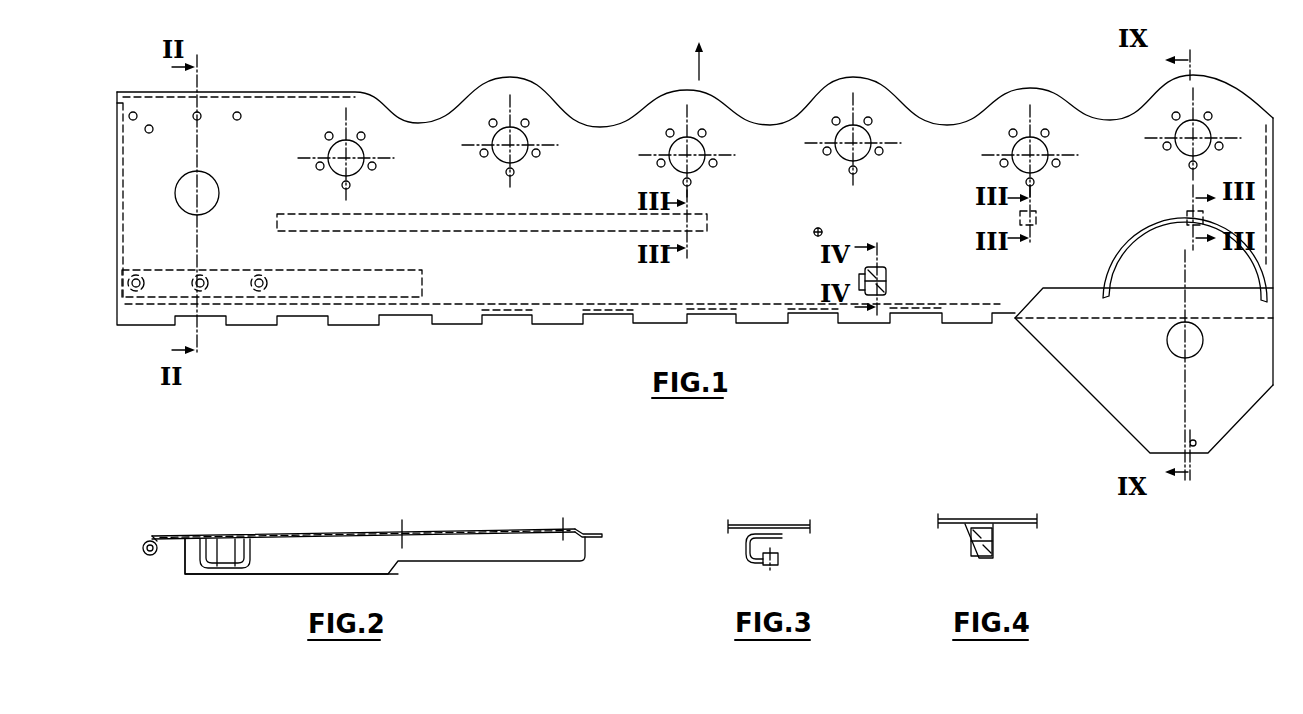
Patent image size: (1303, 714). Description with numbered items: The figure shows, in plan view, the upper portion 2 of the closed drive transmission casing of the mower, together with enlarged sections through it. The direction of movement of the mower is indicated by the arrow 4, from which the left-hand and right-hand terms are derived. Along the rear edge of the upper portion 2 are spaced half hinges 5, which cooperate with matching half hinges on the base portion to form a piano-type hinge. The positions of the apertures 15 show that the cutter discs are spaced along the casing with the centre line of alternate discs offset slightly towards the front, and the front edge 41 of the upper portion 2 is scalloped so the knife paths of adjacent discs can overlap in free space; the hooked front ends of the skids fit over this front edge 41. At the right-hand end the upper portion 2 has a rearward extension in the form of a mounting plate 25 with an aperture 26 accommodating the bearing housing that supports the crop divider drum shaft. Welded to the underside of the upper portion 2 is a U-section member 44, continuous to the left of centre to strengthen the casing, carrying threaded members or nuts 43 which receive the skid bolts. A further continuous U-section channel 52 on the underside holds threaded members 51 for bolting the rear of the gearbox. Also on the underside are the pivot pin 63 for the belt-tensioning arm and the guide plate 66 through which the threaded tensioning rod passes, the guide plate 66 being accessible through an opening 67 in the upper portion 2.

In FIG. 1, the upper portion 2 is at (728, 113).
In FIG. 2, the upper portion 2 is at (483, 529).
In FIG. 3, the upper portion 2 is at (782, 524).
In FIG. 4, the upper portion 2 is at (953, 521).
In FIG. 1, the arrow 4 is at (700, 72).
In FIG. 2, the half hinges 5 is at (150, 556).
In FIG. 1, the apertures 15 is at (774, 145).
In FIG. 1, the mounting plate 25 is at (1090, 393).
In FIG. 1, the aperture 26 is at (1203, 340).
In FIG. 1, the front edge 41 is at (903, 96).
In FIG. 2, the front edge 41 is at (590, 531).
In FIG. 3, the threaded members or nuts 43 is at (780, 560).
In FIG. 1, the U-section member 44 is at (572, 214).
In FIG. 3, the U-section member 44 is at (745, 552).
In FIG. 1, the threaded members 51 is at (141, 274).
In FIG. 2, the threaded members 51 is at (237, 568).
In FIG. 1, the U-section channel 52 is at (318, 270).
In FIG. 2, the U-section channel 52 is at (253, 550).
In FIG. 1, the pivot pin 63 is at (813, 233).
In FIG. 1, the guide plate 66 is at (887, 284).
In FIG. 4, the guide plate 66 is at (995, 556).
In FIG. 1, the opening 67 is at (884, 267).
In FIG. 4, the opening 67 is at (967, 535).